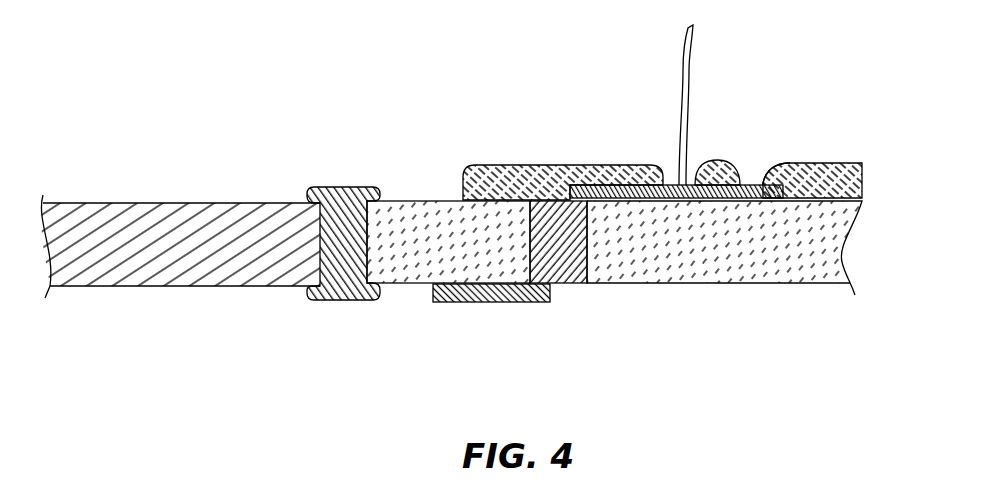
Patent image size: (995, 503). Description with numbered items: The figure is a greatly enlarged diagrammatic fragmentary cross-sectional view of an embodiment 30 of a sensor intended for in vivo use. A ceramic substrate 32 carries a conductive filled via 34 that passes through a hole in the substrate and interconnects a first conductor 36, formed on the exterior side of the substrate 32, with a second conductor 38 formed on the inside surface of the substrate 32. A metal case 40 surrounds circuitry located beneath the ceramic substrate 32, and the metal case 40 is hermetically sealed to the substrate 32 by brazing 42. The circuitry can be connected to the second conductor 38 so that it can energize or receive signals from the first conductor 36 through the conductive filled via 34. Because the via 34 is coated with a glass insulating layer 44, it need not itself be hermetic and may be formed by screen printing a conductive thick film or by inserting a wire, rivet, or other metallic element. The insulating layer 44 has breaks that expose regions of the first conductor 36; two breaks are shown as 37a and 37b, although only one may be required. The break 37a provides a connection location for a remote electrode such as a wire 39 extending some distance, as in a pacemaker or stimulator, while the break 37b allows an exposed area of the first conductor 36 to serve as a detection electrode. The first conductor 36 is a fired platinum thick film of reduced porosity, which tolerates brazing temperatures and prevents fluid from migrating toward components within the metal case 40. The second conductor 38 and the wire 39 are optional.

The embodiment of sensor 30 is at (398, 118).
The ceramic substrate 32 is at (415, 256).
The conductive filled via 34 is at (570, 282).
The first conductor 36 is at (605, 165).
The break 37a is at (705, 150).
The break 37b is at (760, 168).
The second conductor 38 is at (550, 290).
The wire 39 is at (685, 30).
The metal case 40 is at (215, 202).
The brazing 42 is at (340, 188).
The glass insulating layer 44 is at (650, 163).